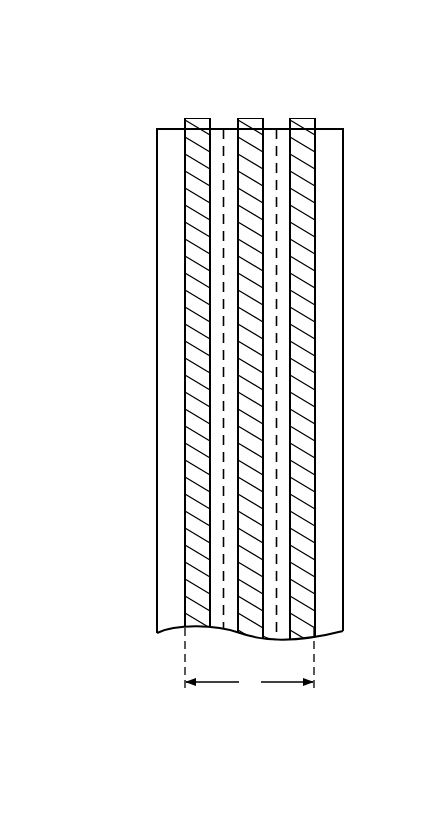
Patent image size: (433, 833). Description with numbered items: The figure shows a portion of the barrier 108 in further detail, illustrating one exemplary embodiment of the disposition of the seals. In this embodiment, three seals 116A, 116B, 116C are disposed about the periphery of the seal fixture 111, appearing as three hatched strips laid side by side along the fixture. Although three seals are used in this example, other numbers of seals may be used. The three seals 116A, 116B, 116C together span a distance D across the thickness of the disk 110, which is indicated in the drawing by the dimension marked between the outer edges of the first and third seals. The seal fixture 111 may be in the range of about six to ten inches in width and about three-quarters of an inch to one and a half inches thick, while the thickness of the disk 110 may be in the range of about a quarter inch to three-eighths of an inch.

The barrier 108 is at (141, 37).
The seal fixture 111 is at (157, 181).
The first seal 116A is at (197, 118).
The second seal 116B is at (250, 118).
The third seal 116C is at (303, 118).
The disk 110 is at (272, 629).